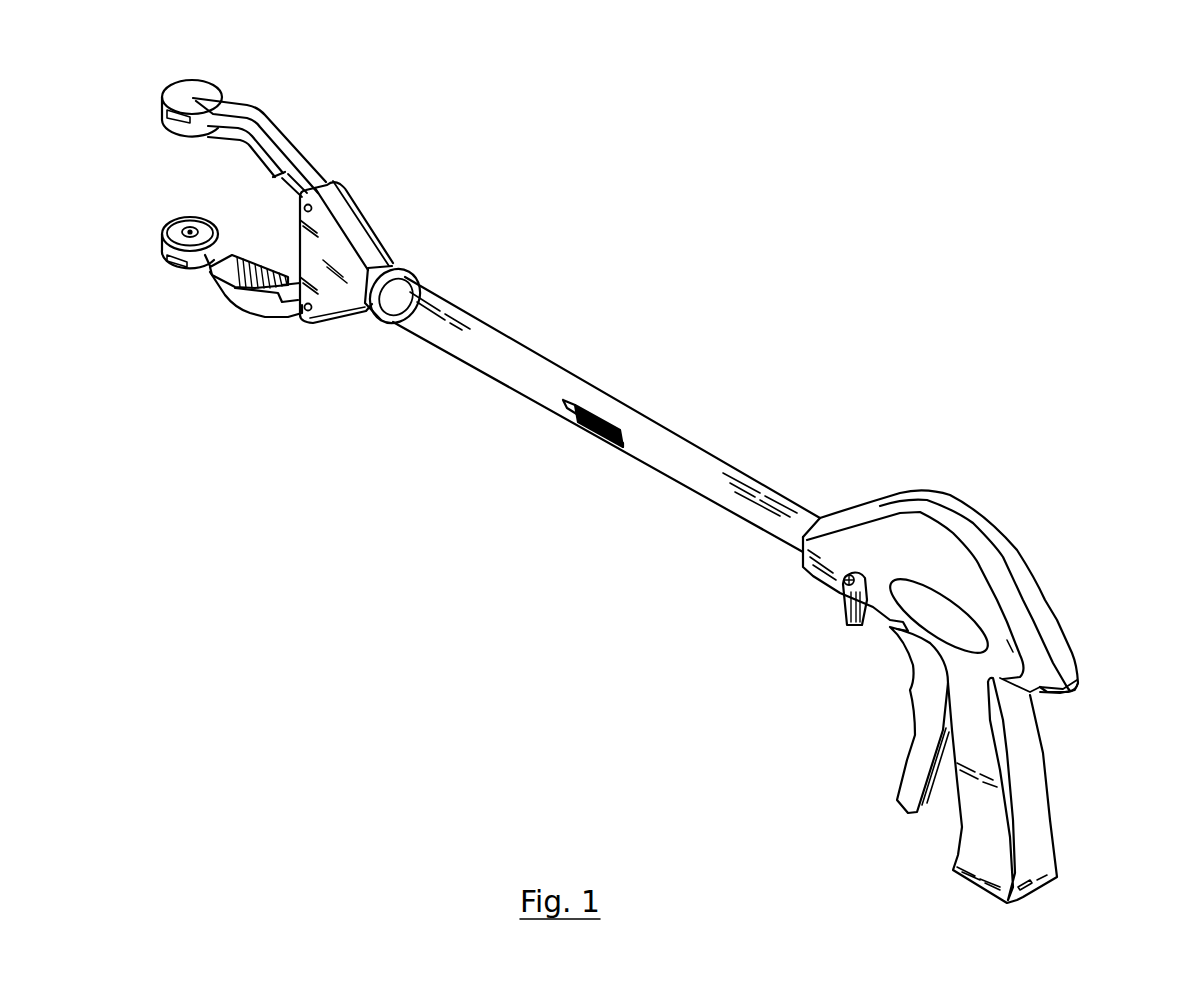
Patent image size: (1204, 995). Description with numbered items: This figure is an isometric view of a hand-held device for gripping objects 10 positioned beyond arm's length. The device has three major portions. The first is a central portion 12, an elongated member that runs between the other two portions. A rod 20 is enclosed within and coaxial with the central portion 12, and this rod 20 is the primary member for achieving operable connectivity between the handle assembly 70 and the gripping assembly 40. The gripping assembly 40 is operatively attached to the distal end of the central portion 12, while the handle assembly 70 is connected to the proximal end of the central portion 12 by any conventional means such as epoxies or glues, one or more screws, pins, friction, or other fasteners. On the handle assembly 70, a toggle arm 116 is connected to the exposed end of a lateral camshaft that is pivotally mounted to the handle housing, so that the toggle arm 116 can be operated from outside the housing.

The hand-held device for gripping objects 10 is at (748, 213).
The central portion 12 is at (478, 348).
The rod 20 is at (563, 400).
The gripping assembly 40 is at (352, 177).
The handle assembly 70 is at (1048, 563).
The toggle arm 116 is at (850, 625).